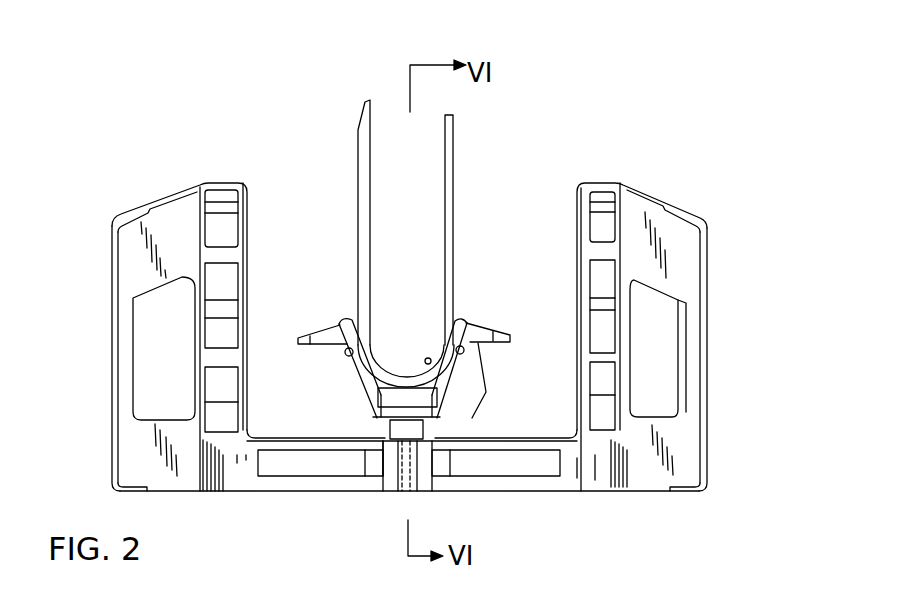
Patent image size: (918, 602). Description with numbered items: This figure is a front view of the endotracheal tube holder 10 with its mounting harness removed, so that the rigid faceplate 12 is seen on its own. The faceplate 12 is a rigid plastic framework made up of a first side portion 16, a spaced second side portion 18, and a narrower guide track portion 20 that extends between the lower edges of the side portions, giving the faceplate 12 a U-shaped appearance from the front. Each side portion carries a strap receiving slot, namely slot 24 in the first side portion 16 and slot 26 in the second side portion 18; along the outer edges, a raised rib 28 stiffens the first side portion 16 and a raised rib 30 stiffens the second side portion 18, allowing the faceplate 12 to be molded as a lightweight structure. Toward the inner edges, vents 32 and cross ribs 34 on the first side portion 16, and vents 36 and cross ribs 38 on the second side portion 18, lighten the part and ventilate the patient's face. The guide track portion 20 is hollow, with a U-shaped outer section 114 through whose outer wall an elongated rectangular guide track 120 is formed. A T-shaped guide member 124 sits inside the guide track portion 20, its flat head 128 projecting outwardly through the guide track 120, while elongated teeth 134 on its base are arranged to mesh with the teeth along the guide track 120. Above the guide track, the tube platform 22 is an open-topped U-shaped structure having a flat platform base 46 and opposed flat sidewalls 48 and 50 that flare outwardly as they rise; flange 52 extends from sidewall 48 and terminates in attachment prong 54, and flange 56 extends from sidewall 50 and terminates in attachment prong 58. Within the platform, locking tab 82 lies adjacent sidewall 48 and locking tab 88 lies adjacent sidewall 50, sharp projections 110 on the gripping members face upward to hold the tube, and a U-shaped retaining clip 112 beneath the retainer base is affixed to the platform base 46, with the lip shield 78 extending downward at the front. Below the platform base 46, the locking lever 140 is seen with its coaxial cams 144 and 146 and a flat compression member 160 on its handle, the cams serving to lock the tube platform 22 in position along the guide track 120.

The endotracheal tube holder 10 is at (642, 157).
The faceplate 12 is at (603, 480).
The first side portion 16 is at (163, 203).
The second side portion 18 is at (687, 212).
The guide track portion 20 is at (502, 488).
The tube platform 22 is at (482, 304).
The strap receiving slot 24 is at (167, 376).
The strap receiving slot 26 is at (661, 352).
The raised rib 28 is at (108, 460).
The raised rib 30 is at (707, 432).
The vents 32 is at (221, 231).
The cross ribs 34 is at (220, 258).
The vents 36 is at (603, 222).
The cross ribs 38 is at (597, 252).
The platform base 46 is at (437, 407).
The sidewall 48 is at (355, 366).
The sidewall 50 is at (450, 372).
The flange 52 is at (313, 337).
The attachment prong 54 is at (312, 333).
The flange 56 is at (483, 323).
The attachment prong 58 is at (513, 338).
The lip shield 78 is at (327, 405).
The locking tab 82 is at (357, 170).
The locking tab 88 is at (453, 168).
The sharp projections 110 is at (428, 358).
The retaining clip 112 is at (392, 397).
The outer section 114 is at (243, 488).
The guide track 120 is at (480, 472).
The guide member 124 is at (371, 452).
The head 128 is at (390, 470).
The teeth 134 is at (363, 460).
The locking lever 140 is at (385, 492).
The cam 144 is at (487, 451).
The cam 146 is at (420, 492).
The flat compression member 160 is at (430, 433).